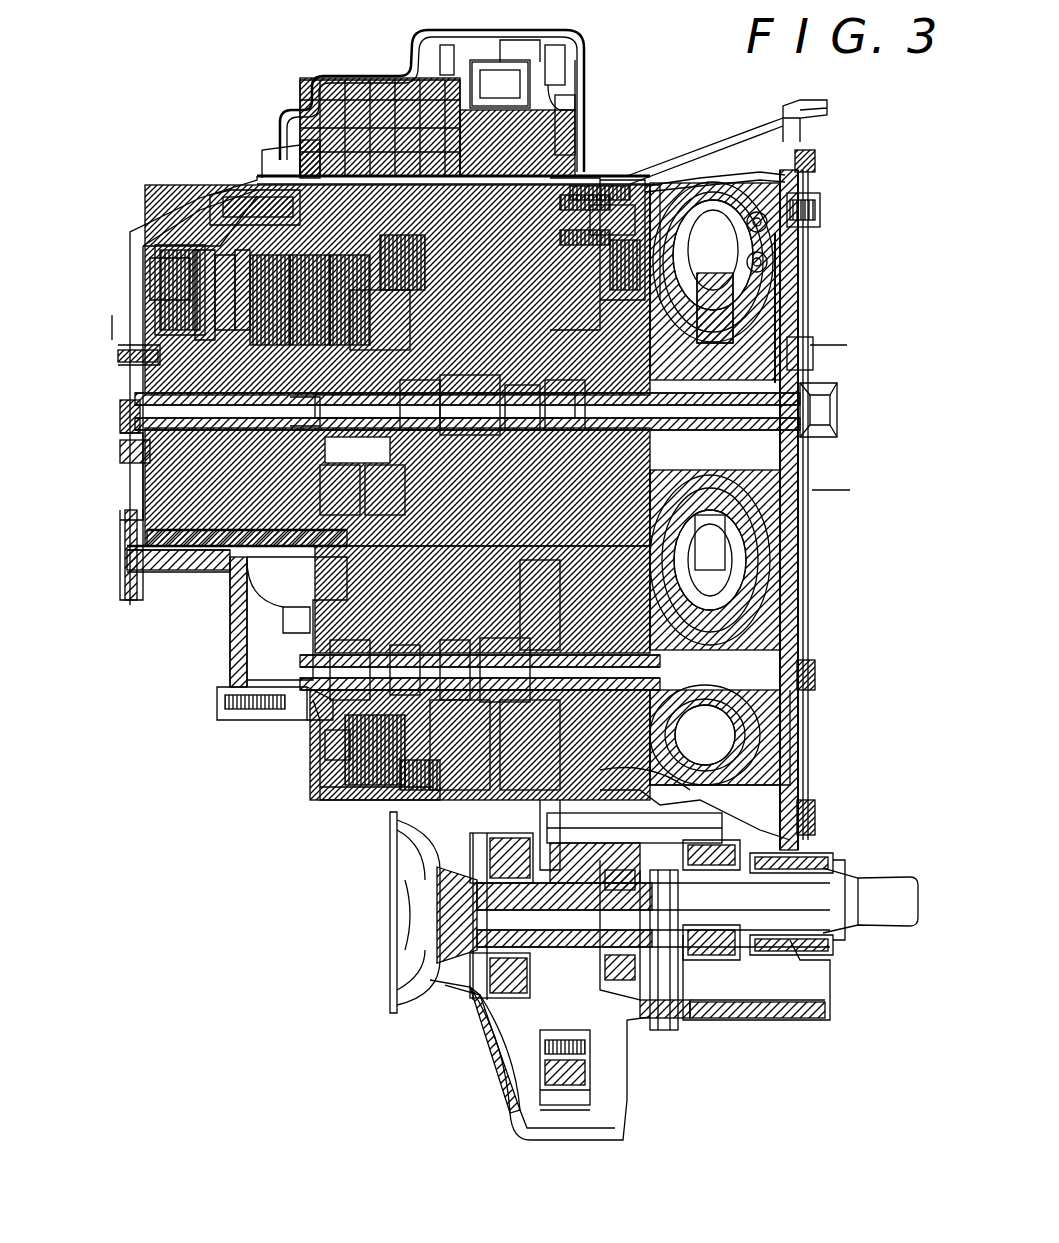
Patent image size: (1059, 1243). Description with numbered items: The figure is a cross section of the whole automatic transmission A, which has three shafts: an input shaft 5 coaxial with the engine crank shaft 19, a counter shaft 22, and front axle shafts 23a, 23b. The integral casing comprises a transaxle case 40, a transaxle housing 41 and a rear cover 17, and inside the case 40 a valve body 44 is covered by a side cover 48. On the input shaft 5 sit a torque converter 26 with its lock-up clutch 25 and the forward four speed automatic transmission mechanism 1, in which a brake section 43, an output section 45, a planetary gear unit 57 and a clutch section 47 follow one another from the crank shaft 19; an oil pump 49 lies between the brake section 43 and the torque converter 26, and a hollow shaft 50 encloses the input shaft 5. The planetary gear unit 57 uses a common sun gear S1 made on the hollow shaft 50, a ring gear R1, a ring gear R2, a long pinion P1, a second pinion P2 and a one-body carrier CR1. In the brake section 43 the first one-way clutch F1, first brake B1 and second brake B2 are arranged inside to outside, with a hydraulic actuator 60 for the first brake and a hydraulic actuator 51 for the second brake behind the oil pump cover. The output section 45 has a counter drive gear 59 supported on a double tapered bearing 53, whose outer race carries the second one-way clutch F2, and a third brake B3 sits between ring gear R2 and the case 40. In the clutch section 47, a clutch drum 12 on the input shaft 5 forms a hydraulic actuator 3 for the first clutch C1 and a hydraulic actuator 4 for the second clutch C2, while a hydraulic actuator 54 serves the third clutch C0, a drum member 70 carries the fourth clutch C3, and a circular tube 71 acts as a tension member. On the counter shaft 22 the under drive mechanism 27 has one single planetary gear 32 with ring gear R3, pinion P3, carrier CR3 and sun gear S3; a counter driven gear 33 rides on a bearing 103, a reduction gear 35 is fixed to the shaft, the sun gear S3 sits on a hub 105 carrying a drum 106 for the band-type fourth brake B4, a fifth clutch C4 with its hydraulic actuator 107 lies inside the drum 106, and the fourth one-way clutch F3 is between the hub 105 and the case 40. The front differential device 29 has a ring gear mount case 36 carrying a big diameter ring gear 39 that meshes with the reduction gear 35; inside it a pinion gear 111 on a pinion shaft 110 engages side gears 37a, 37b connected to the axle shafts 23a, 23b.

The forward four speed automatic transmission mechanism 1 is at (90, 319).
The hydraulic actuator 3 is at (150, 352).
The hydraulic actuator 4 is at (155, 385).
The input shaft 5 is at (812, 391).
The clutch drum 12 is at (200, 252).
The rear cover 17 is at (128, 266).
The engine crank shaft 19 is at (815, 345).
The counter shaft 22 is at (640, 660).
The front axle shaft 23a is at (435, 985).
The front axle shaft 23b is at (900, 948).
The lock-up clutch 25 is at (795, 197).
The torque converter 26 is at (750, 160).
The under drive mechanism 27 is at (268, 658).
The front differential device 29 is at (728, 819).
The single planetary gear 32 is at (454, 764).
The counter driven gear 33 is at (546, 605).
The reduction gear 35 is at (700, 696).
The ring gear mount case 36 is at (605, 812).
The side gear 37a is at (612, 995).
The side gear 37b is at (762, 958).
The ring gear 39 is at (565, 1120).
The transaxle case 40 is at (582, 172).
The transaxle housing 41 is at (745, 165).
The brake section 43 is at (612, 178).
The valve body 44 is at (390, 98).
The output section 45 is at (532, 62).
The clutch section 47 is at (250, 175).
The side cover 48 is at (348, 78).
The oil pump 49 is at (660, 188).
The hollow shaft 50 is at (467, 411).
The hydraulic actuator 51 is at (608, 205).
The double tapered bearing 53 is at (522, 407).
The hydraulic actuator 54 is at (148, 262).
The planetary gear unit 57 is at (300, 142).
The counter drive gear 59 is at (495, 62).
The hydraulic actuator 60 is at (700, 158).
The drum member 70 is at (222, 258).
The circular tube 71 is at (243, 258).
The bearing 103 is at (480, 672).
The hub 105 is at (363, 670).
The drum 106 is at (385, 795).
The hydraulic actuator 107 is at (330, 598).
The pinion shaft 110 is at (685, 1005).
The pinion gear 111 is at (705, 1020).
The automatic transmission A is at (190, 119).
The first brake B1 is at (632, 240).
The second brake B2 is at (598, 182).
The third brake B3 is at (402, 256).
The fourth brake B4 is at (400, 800).
The third clutch C0 is at (180, 250).
The first clutch C1 is at (302, 288).
The second clutch C2 is at (267, 288).
The fourth clutch C3 is at (337, 288).
The fifth clutch C4 is at (340, 760).
The first one-way clutch F1 is at (565, 405).
The second one-way clutch F2 is at (446, 68).
The fourth one-way clutch F3 is at (326, 744).
The ring gear R1 is at (340, 477).
The ring gear R2 is at (380, 320).
The ring gear R3 is at (530, 759).
The pinion P1 is at (420, 405).
The second pinion P2 is at (383, 477).
The pinion P3 is at (456, 670).
The sun gear S1 is at (318, 410).
The sun gear S3 is at (417, 670).
The carrier CR1 is at (470, 405).
The carrier CR3 is at (505, 670).